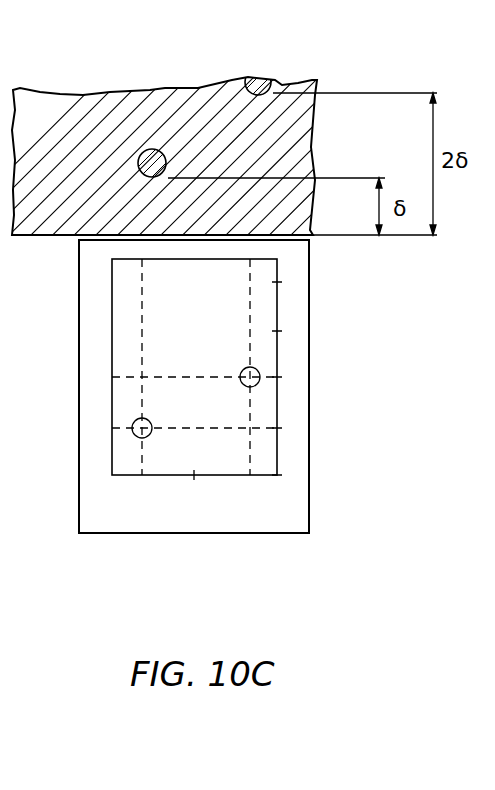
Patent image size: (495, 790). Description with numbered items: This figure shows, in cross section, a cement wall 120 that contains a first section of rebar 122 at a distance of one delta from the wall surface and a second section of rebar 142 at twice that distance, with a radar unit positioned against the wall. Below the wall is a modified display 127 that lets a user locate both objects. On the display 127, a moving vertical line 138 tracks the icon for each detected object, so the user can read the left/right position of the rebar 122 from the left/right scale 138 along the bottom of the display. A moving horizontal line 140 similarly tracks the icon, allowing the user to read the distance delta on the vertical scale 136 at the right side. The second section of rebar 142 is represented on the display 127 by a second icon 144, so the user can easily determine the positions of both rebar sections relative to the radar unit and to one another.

The cement wall 120 is at (53, 102).
The rebar 122 is at (139, 155).
The second section of rebar 142 is at (257, 78).
The modified display 127 is at (124, 337).
The vertical scale 136 is at (278, 357).
The moving vertical line 138 is at (143, 295).
The moving horizontal line 140 is at (177, 427).
The second icon 144 is at (243, 370).